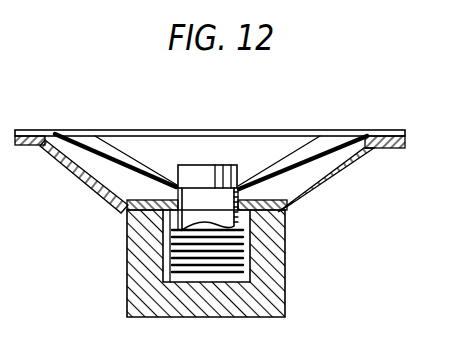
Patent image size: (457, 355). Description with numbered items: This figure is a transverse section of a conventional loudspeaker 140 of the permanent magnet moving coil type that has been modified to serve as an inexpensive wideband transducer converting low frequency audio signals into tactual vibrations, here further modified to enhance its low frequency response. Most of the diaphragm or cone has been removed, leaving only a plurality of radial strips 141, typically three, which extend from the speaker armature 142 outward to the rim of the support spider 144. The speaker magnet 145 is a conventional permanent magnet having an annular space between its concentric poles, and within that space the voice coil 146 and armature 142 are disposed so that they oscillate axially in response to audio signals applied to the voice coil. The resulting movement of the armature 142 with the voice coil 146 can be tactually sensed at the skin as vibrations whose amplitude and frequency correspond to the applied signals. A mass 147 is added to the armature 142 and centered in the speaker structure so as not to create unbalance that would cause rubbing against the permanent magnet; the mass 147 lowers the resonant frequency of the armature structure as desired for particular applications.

The loudspeaker 140 is at (327, 103).
The radial strips 141 is at (123, 155).
The speaker armature 142 is at (292, 199).
The support spider 144 is at (93, 183).
The speaker magnet 145 is at (285, 279).
The voice coil 146 is at (168, 263).
The mass 147 is at (218, 165).